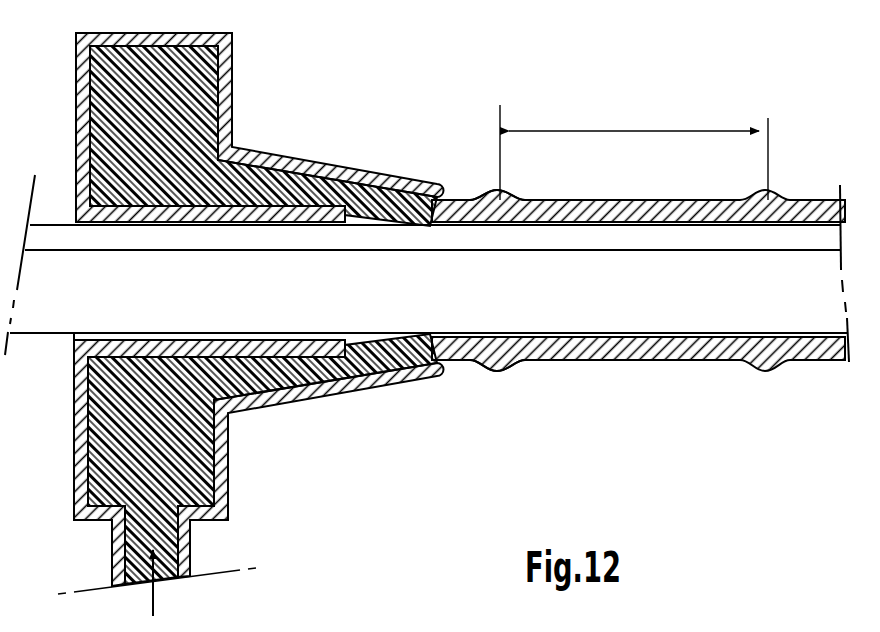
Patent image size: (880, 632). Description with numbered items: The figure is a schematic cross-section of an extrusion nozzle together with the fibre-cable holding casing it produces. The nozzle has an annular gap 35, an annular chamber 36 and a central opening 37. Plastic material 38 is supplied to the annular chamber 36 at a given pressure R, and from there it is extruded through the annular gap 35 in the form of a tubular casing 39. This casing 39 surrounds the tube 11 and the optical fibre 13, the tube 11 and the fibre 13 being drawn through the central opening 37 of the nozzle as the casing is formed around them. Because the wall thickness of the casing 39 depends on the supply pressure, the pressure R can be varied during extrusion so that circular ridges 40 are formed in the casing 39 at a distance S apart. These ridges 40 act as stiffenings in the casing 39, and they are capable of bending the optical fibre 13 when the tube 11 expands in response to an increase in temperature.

The tube 11 is at (832, 316).
The optical fibre 13 is at (826, 243).
The annular gap 35 is at (385, 388).
The annular chamber 36 is at (228, 452).
The central opening 37 is at (76, 343).
The plastic material 38 is at (187, 124).
The tubular casing 39 is at (654, 368).
The circular ridges 40 is at (514, 374).
The distance S is at (666, 131).
The pressure R is at (155, 594).